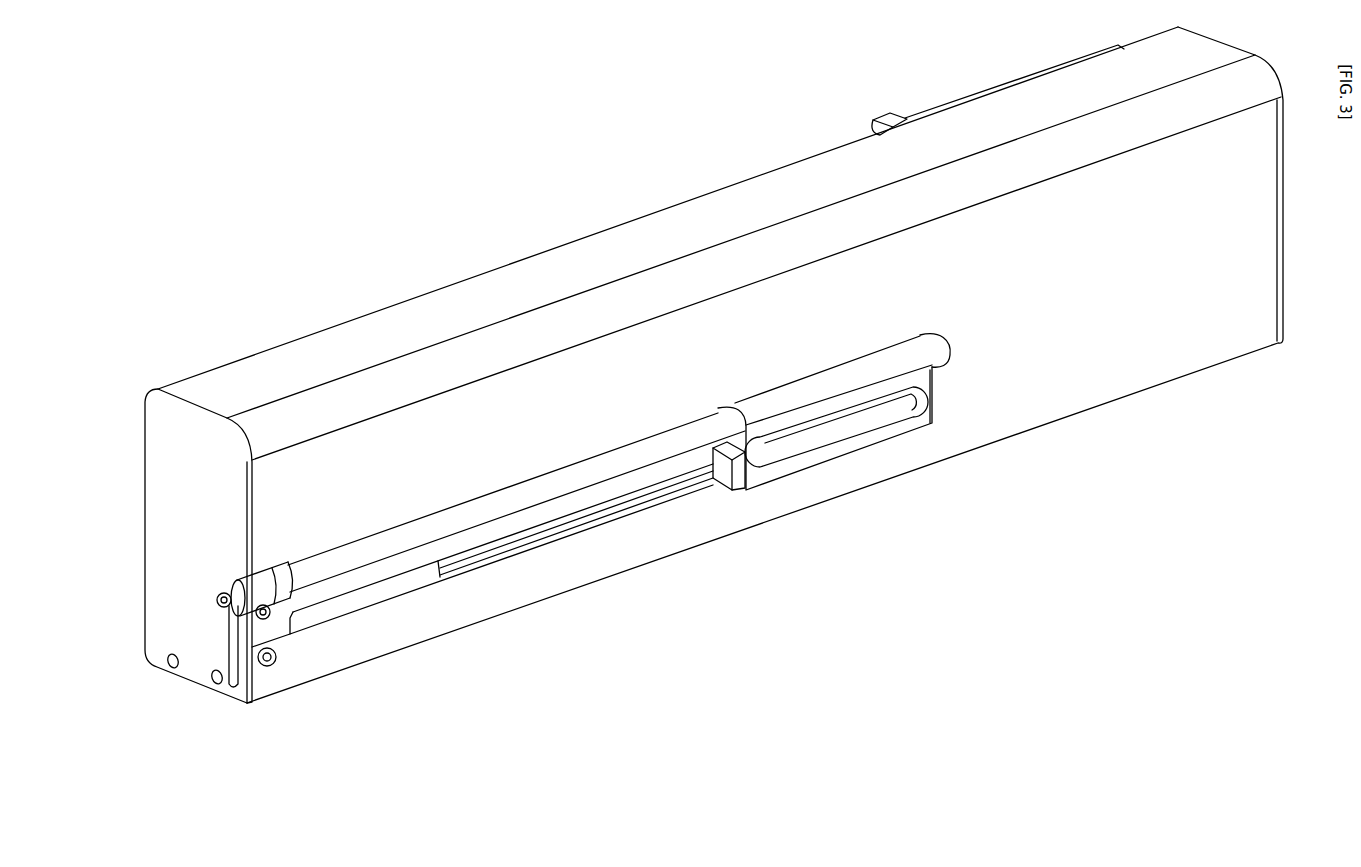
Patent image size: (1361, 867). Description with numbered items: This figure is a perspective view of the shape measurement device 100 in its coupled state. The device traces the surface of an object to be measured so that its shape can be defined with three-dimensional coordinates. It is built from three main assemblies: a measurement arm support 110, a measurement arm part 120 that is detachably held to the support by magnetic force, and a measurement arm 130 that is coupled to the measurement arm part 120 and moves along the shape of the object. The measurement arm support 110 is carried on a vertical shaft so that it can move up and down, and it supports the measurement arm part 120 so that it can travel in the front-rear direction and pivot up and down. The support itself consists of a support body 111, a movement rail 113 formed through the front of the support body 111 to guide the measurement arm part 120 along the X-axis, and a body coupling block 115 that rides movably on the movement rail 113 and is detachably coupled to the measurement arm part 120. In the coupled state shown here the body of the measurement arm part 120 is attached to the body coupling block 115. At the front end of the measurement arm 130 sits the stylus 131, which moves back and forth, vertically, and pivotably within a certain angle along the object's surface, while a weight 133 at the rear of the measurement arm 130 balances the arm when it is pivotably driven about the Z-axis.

The shape measurement device 100 is at (311, 215).
The measurement arm support 110 is at (750, 628).
The support body 111 is at (540, 578).
The movement rail 113 is at (383, 592).
The body coupling block 115 is at (730, 468).
The measurement arm part 120 is at (843, 428).
The measurement arm 130 is at (590, 463).
The stylus 131 is at (232, 631).
The weight 133 is at (940, 357).